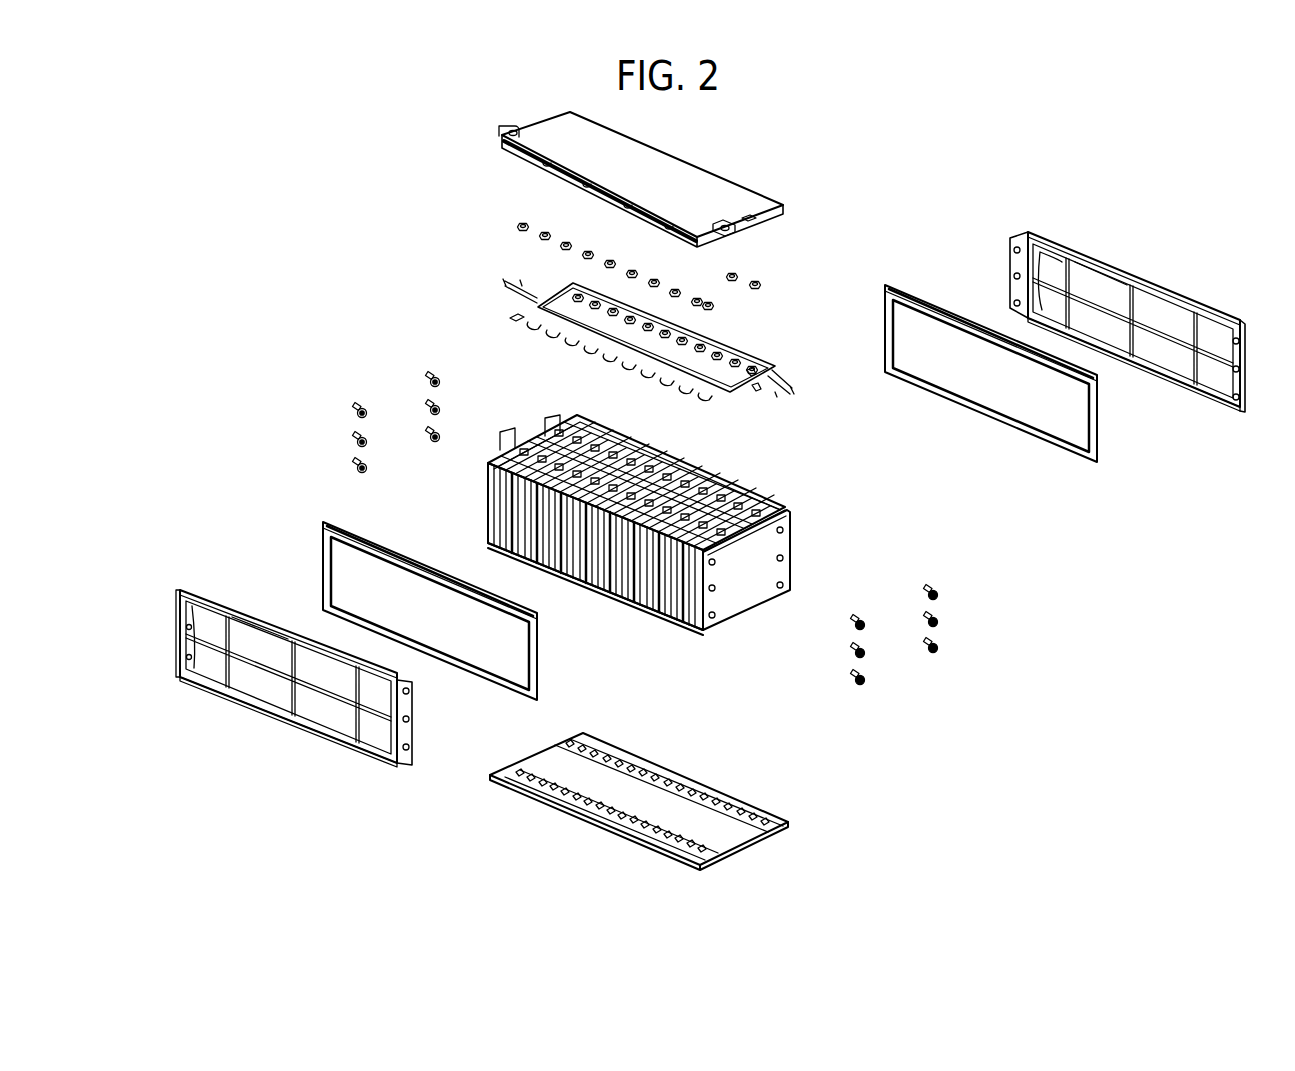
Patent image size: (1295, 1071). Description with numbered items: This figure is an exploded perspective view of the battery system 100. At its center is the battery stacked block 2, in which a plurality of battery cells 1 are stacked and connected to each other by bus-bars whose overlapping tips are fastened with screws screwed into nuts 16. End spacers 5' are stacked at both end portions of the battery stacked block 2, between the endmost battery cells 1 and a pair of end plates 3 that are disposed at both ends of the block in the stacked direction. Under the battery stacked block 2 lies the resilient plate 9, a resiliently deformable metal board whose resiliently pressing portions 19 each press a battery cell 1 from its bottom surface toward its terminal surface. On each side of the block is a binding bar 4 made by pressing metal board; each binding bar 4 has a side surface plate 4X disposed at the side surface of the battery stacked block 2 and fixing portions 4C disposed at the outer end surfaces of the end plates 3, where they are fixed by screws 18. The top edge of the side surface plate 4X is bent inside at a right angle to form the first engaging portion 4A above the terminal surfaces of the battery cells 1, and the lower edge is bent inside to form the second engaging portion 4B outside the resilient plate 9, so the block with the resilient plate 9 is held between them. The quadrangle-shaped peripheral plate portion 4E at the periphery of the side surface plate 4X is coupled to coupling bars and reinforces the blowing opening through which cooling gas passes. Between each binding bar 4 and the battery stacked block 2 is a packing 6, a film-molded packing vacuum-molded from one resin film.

The battery system 100 is at (878, 167).
The battery stacked block 2 is at (633, 562).
The battery cell 1 is at (548, 532).
The end spacer 5' is at (585, 562).
The end plate 3 is at (743, 578).
The binding bar 4 is at (710, 492).
The first engaging portion 4A is at (710, 490).
The second engaging portion 4B is at (1188, 393).
The fixing portion 4C is at (1015, 262).
The peripheral plate portion 4E is at (1035, 270).
The side surface plate 4X is at (1035, 168).
The packing 6 is at (922, 280).
The resilient plate 9 is at (591, 753).
The nut 16 is at (518, 226).
The screw 18 is at (357, 411).
The resiliently pressing portion 19 is at (577, 732).